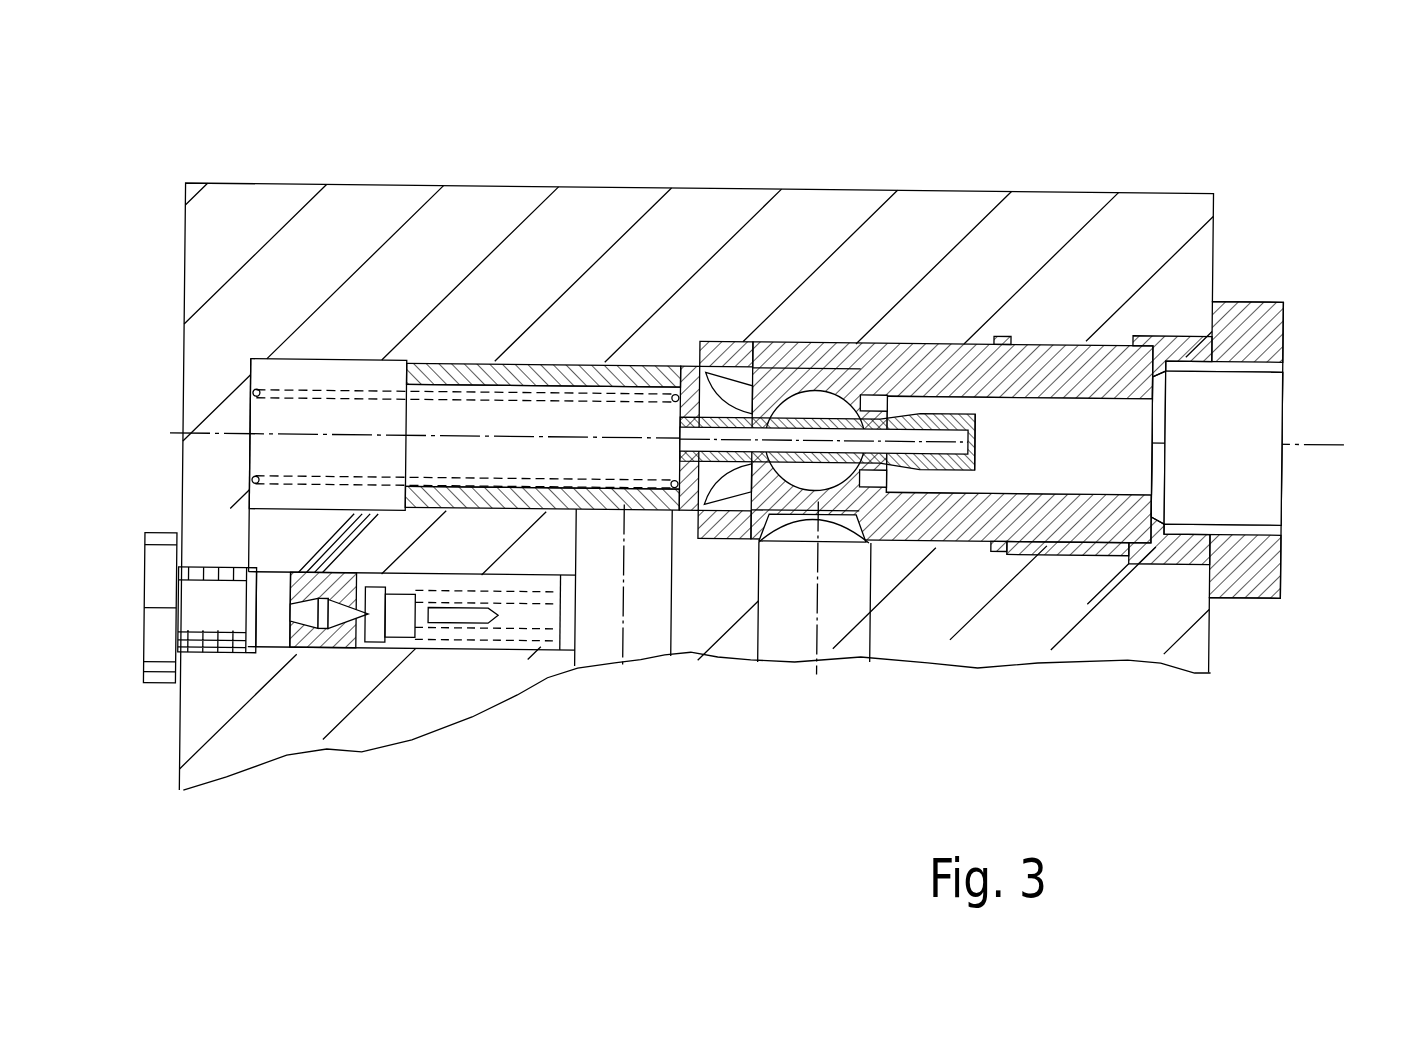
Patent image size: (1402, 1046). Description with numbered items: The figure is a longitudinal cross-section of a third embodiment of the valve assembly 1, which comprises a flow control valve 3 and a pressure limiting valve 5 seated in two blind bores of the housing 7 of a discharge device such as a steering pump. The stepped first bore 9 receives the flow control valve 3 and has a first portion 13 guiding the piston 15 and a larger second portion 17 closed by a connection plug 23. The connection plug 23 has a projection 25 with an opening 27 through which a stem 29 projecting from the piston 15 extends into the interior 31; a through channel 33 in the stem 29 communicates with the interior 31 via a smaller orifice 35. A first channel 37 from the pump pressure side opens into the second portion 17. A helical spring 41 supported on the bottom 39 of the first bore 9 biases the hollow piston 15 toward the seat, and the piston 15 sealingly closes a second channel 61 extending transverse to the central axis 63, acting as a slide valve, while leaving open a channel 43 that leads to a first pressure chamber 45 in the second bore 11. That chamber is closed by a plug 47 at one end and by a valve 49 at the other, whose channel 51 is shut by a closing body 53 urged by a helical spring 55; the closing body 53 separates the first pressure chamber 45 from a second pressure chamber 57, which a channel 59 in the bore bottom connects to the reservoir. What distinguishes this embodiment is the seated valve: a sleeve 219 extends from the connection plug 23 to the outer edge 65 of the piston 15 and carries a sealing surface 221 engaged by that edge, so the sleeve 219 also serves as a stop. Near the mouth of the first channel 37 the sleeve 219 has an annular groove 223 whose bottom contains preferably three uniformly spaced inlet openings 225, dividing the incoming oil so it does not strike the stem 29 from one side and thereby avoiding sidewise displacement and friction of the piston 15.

The valve assembly 1 is at (1227, 267).
The flow control valve 3 is at (457, 359).
The pressure limiting valve 5 is at (310, 657).
The housing 7 is at (1142, 226).
The first bore 9 is at (268, 359).
The second bore 11 is at (522, 652).
The first portion 13 is at (308, 377).
The piston 15 is at (413, 375).
The second portion 17 is at (810, 353).
The connection plug 23 is at (1247, 580).
The projection 25 is at (927, 377).
The opening 27 is at (866, 392).
The stem 29 is at (776, 360).
The interior 31 is at (1044, 424).
The through channel 33 is at (916, 462).
The orifice 35 is at (975, 442).
The first channel 37 is at (845, 627).
The bottom 39 is at (250, 423).
The helical spring 41 is at (252, 401).
The channel 43 is at (272, 548).
The first pressure chamber 45 is at (276, 651).
The plug 47 is at (170, 615).
The valve 49 is at (350, 648).
The channel 51 is at (326, 645).
The closing body 53 is at (380, 645).
The helical spring 55 is at (570, 619).
The second pressure chamber 57 is at (540, 620).
The channel 59 is at (580, 619).
The second channel 61 is at (647, 627).
The central axis 63 is at (1345, 430).
The outer edge 65 is at (655, 358).
The sleeve 219 is at (737, 348).
The sealing surface 221 is at (703, 358).
The annular groove 223 is at (820, 632).
The inlet openings 225 is at (799, 512).